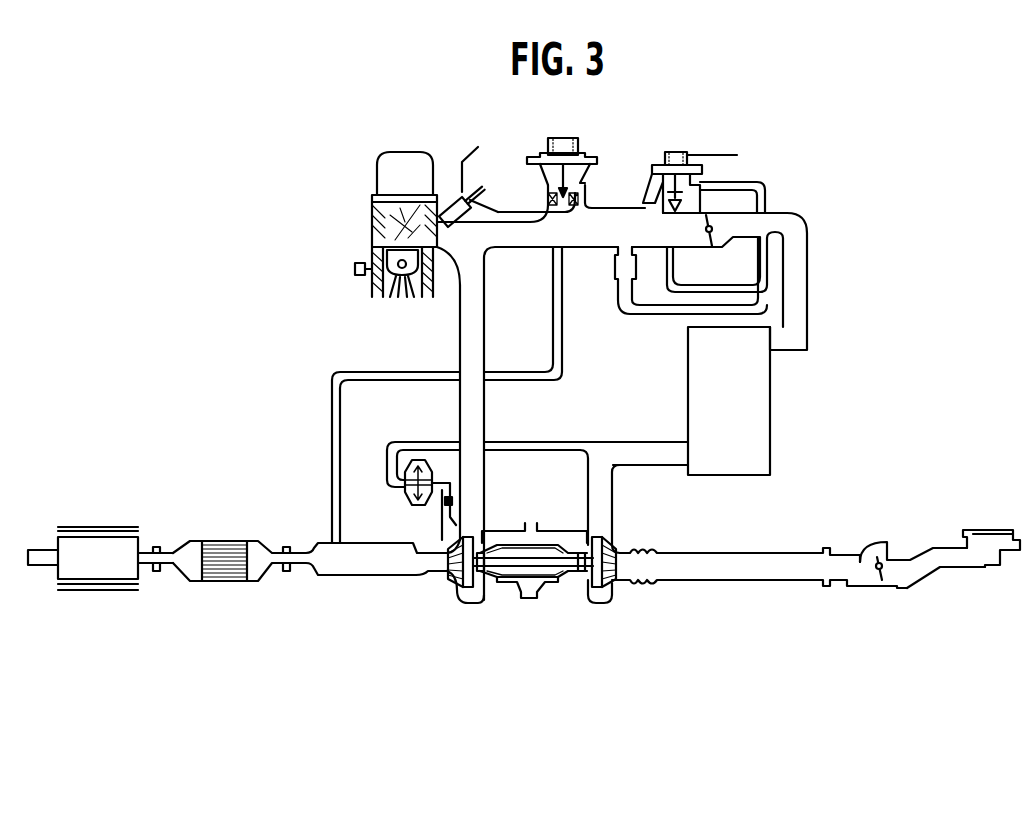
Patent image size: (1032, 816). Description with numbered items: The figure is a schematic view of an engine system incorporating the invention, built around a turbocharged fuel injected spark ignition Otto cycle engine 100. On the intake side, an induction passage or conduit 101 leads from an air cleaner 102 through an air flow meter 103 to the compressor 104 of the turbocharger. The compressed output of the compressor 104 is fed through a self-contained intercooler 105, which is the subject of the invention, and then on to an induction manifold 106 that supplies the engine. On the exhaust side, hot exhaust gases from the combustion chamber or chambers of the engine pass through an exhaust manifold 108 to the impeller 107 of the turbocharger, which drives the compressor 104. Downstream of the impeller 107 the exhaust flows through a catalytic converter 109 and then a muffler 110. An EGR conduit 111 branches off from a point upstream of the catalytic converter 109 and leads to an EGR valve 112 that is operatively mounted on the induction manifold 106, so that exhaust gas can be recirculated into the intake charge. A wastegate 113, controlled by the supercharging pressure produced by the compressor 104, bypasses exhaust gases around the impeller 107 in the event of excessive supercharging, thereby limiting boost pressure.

The engine 100 is at (366, 217).
The induction passage 101 is at (768, 575).
The air cleaner 102 is at (985, 545).
The air flow meter 103 is at (878, 580).
The compressor 104 is at (603, 602).
The self-contained intercooler 105 is at (766, 428).
The induction manifold 106 is at (594, 247).
The impeller 107 is at (467, 603).
The exhaust manifold 108 is at (470, 329).
The catalytic converter 109 is at (226, 540).
The muffler 110 is at (118, 526).
The EGR conduit 111 is at (330, 410).
The EGR valve 112 is at (592, 162).
The wastegate 113 is at (460, 530).